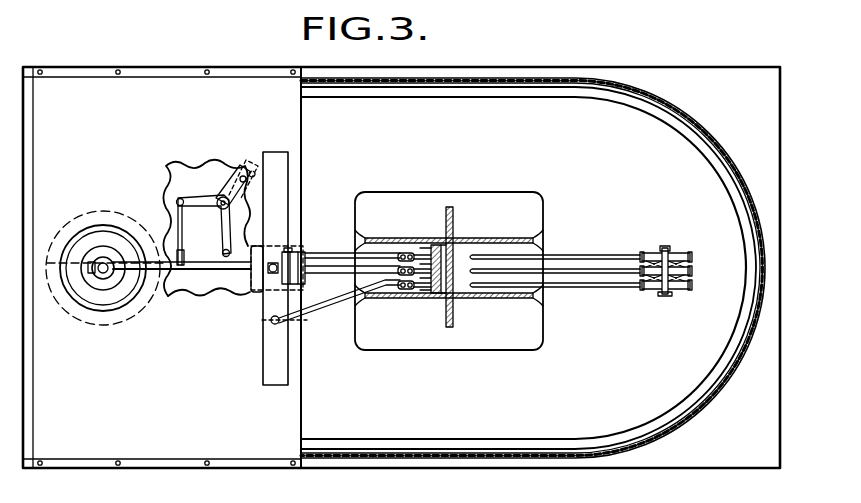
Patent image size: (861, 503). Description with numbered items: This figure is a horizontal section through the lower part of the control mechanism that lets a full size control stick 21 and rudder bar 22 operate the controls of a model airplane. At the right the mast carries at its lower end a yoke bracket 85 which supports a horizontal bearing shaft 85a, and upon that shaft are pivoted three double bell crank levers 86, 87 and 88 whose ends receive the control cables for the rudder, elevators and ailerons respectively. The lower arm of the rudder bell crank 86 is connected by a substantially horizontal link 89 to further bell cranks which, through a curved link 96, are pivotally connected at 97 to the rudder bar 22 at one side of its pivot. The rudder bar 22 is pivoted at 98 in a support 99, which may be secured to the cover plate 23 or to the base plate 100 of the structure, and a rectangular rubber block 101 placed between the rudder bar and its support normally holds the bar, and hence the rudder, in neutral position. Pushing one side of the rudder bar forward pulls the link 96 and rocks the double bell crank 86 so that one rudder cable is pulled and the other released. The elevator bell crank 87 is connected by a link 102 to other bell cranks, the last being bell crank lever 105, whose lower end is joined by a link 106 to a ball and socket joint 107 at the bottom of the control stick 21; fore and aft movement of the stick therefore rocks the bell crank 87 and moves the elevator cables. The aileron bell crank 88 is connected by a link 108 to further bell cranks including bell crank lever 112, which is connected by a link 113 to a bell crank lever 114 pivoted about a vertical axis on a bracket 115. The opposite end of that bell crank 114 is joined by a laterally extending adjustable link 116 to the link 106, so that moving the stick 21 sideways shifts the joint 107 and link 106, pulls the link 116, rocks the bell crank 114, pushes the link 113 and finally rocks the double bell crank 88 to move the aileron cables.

The control stick 21 is at (104, 262).
The rudder bar 22 is at (290, 160).
The cover plate 23 is at (238, 440).
The yoke bracket 85 is at (685, 278).
The horizontal bearing shaft 85a is at (665, 296).
The double bell crank lever 86 is at (678, 294).
The double bell crank lever 87 is at (693, 273).
The double bell crank lever 88 is at (672, 251).
The horizontal link 89 is at (607, 289).
The curved link 96 is at (322, 308).
The pivotal connection 97 is at (272, 322).
The pivot 98 is at (271, 272).
The support 99 is at (293, 245).
The base plate 100 is at (183, 185).
The rubber block 101 is at (293, 249).
The link 102 is at (590, 268).
The bell crank lever 105 is at (424, 284).
The link 106 is at (199, 269).
The ball and socket joint 107 is at (103, 276).
The link 108 is at (562, 254).
The bell crank lever 112 is at (421, 250).
The link 113 is at (373, 238).
The bell crank lever 114 is at (200, 197).
The bracket 115 is at (238, 165).
The adjustable link 116 is at (185, 238).